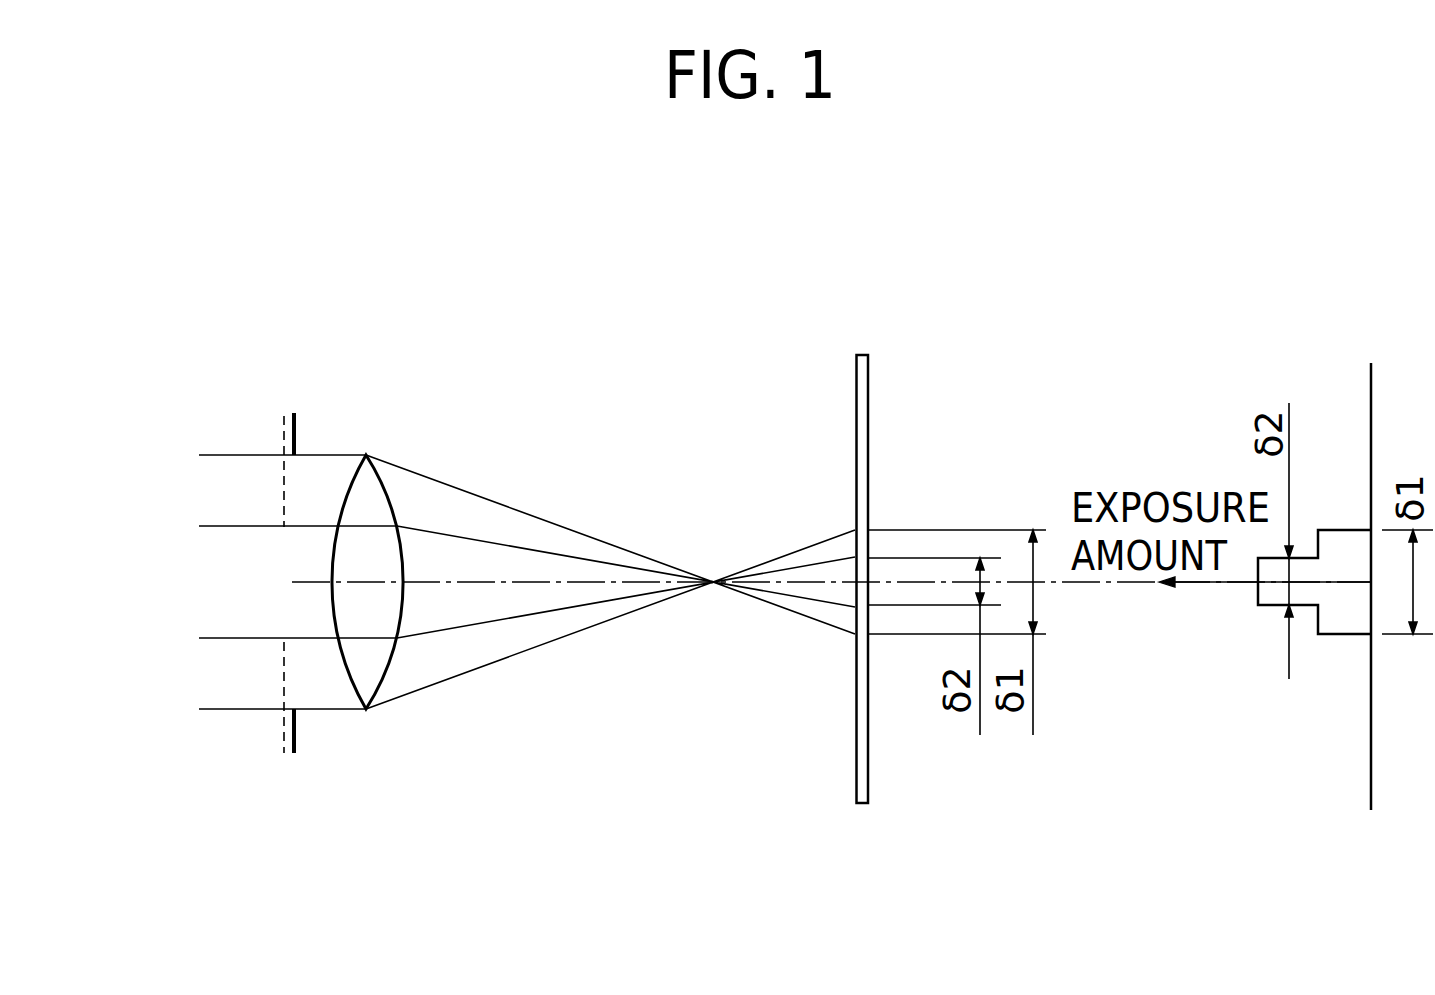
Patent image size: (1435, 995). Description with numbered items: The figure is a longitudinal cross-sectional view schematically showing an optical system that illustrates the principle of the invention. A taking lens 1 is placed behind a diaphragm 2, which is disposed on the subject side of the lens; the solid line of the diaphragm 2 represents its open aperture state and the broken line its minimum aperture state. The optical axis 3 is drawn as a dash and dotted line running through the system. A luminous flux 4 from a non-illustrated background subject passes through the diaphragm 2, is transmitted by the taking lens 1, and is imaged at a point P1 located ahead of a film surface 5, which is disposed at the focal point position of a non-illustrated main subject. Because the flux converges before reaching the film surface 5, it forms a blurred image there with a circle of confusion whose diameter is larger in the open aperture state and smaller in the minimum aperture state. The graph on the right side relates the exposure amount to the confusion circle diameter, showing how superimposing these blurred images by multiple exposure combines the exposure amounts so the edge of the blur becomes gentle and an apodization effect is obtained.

The taking lens 1 is at (373, 502).
The diaphragm 2 is at (283, 422).
The optical axis 3 is at (529, 584).
The luminous flux 4 is at (166, 455).
The film surface 5 is at (856, 394).
The point P1 is at (713, 588).